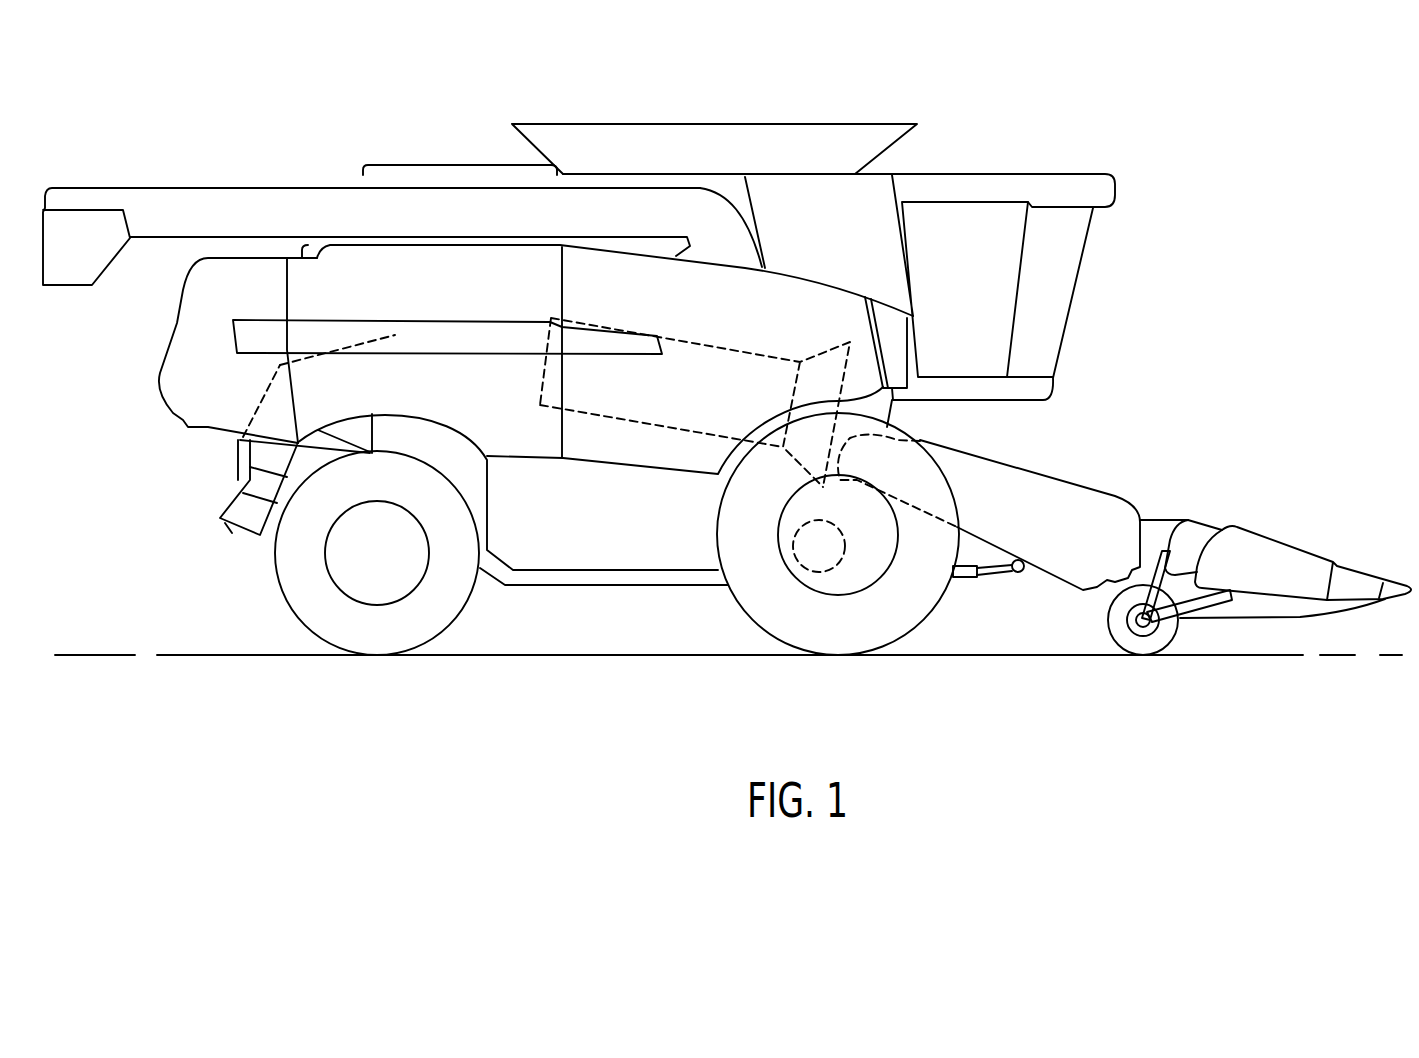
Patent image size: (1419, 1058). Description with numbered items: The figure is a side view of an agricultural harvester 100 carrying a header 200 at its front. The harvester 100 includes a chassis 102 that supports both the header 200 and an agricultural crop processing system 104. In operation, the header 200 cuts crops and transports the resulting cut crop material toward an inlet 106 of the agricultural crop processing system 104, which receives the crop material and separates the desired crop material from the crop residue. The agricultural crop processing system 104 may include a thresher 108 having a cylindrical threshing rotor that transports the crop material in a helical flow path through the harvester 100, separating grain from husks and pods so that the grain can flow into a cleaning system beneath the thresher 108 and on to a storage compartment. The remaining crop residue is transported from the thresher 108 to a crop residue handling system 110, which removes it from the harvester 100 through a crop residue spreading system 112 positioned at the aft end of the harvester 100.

The agricultural harvester 100 is at (1113, 77).
The chassis 102 is at (540, 593).
The agricultural crop processing system 104 is at (703, 313).
The inlet 106 is at (925, 438).
The thresher 108 is at (710, 342).
The crop residue handling system 110 is at (343, 310).
The crop residue spreading system 112 is at (222, 497).
The header 200 is at (1313, 498).